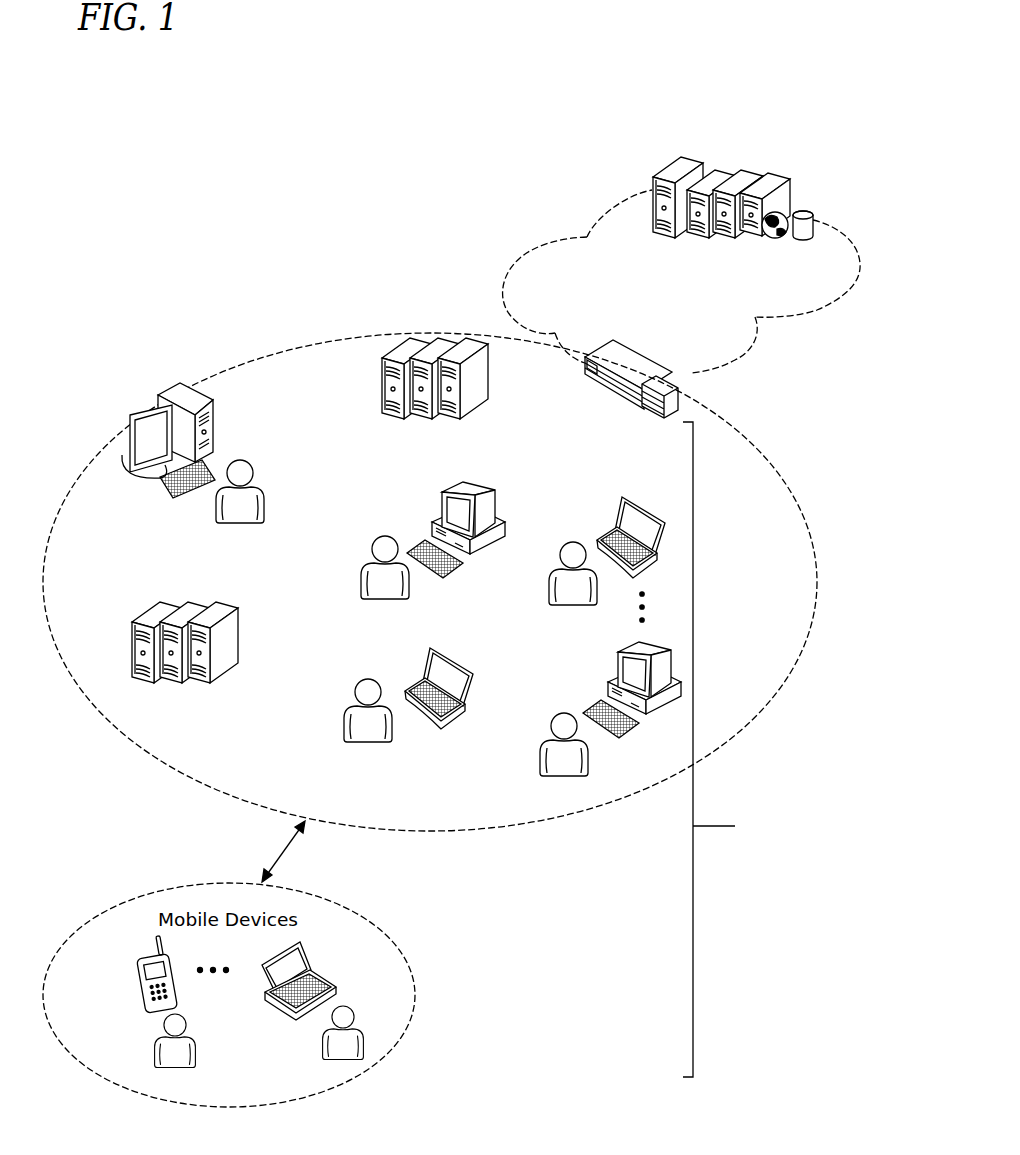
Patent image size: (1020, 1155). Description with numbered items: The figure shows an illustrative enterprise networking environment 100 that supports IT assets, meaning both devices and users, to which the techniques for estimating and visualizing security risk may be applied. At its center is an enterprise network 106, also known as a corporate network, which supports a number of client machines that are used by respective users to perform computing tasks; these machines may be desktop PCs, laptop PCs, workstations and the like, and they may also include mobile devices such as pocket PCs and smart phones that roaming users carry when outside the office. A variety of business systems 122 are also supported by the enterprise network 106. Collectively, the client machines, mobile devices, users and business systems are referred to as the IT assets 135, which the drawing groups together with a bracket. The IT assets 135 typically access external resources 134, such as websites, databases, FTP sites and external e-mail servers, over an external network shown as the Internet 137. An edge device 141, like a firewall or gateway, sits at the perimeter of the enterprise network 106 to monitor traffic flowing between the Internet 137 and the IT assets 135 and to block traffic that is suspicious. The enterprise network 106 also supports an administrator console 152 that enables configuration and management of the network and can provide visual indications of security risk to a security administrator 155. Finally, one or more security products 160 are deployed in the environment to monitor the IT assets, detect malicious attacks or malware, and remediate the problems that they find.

The enterprise networking environment 100 is at (259, 193).
The Internet 137 is at (555, 243).
The external resources 134 is at (790, 203).
The edge device 141 is at (585, 377).
The enterprise network 106 is at (575, 830).
The business systems 122 is at (381, 392).
The administrator console 152 is at (216, 445).
The security administrator 155 is at (256, 479).
The security products 160 is at (131, 649).
The IT assets 135 is at (775, 749).